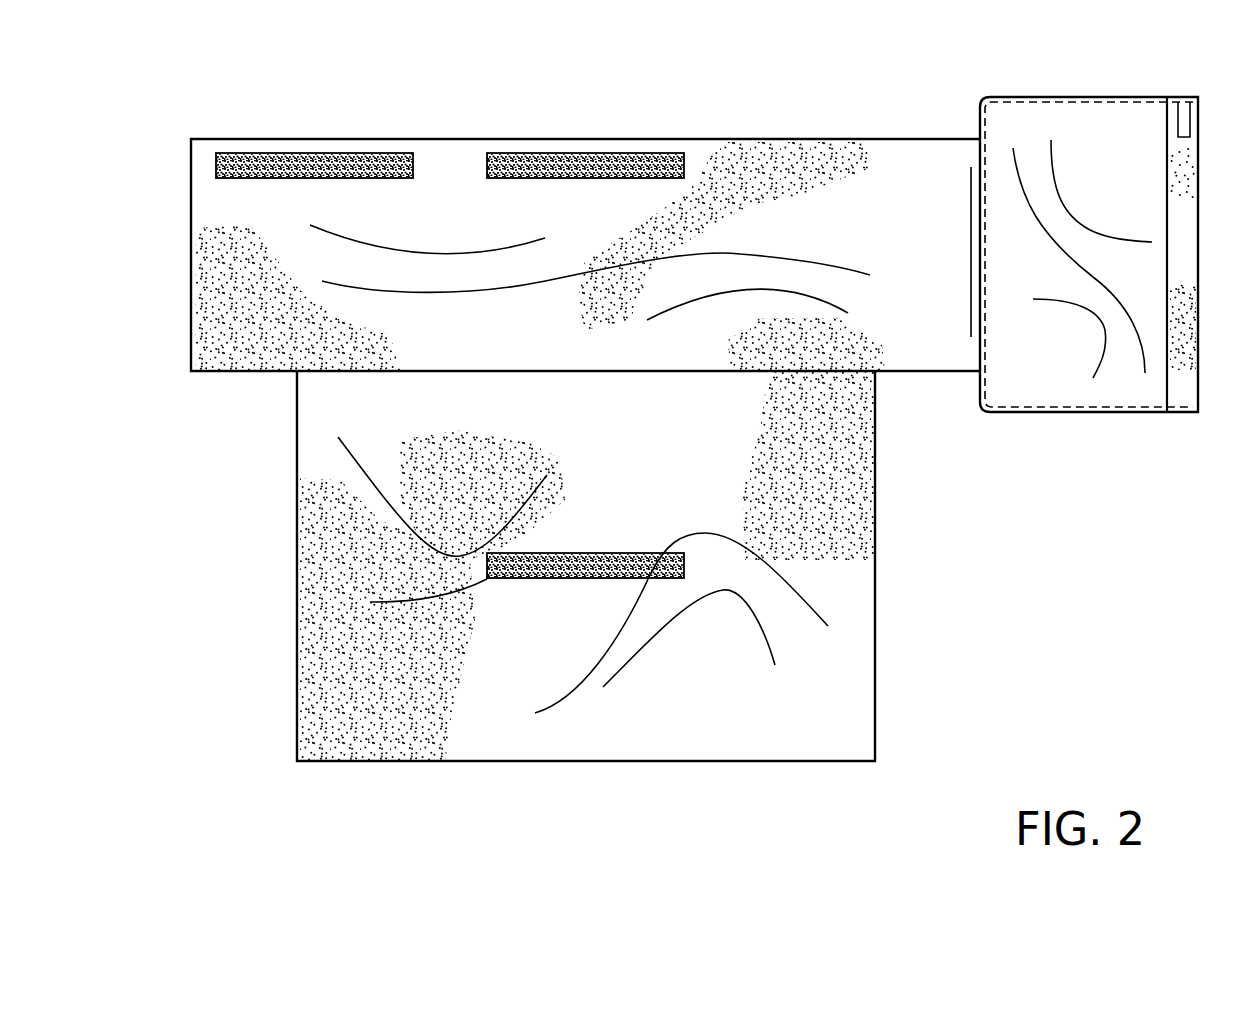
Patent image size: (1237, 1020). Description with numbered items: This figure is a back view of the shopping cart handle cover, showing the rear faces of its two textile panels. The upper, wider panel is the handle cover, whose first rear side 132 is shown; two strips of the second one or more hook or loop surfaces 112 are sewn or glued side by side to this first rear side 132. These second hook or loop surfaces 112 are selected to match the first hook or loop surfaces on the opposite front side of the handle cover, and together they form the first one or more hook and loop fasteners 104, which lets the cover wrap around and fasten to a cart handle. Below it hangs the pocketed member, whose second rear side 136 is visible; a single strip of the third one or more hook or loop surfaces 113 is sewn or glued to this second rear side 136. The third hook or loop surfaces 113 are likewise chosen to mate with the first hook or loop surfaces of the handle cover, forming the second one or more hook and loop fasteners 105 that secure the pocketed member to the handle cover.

The first one or more hook and loop fasteners 104 is at (513, 178).
The second one or more hook or loop surfaces 112 is at (515, 150).
The first rear side 132 is at (880, 177).
The third one or more hook or loop surfaces 113 is at (602, 580).
The second one or more hook and loop fasteners 105 is at (588, 553).
The second rear side 136 is at (805, 613).